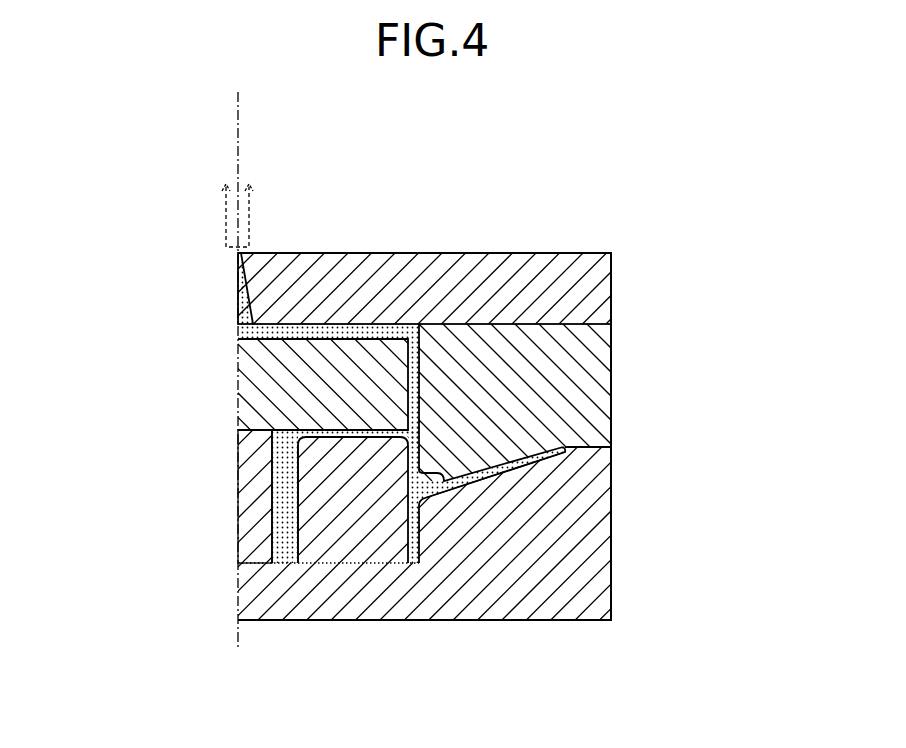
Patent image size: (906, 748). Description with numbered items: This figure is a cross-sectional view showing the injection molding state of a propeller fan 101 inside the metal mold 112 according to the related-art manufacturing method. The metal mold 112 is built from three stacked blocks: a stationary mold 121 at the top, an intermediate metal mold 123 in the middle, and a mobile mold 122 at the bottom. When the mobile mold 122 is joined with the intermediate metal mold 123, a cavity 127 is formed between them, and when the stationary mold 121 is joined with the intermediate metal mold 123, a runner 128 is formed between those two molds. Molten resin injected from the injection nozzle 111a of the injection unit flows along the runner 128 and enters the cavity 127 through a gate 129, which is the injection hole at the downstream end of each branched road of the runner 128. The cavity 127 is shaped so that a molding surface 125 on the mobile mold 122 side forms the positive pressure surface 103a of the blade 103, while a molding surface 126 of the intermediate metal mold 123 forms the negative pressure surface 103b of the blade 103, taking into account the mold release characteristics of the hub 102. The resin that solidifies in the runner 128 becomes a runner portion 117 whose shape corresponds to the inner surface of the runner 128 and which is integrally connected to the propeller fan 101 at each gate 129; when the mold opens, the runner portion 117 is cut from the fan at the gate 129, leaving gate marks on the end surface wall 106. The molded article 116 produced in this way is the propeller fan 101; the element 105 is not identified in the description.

The propeller fan 101 is at (168, 521).
The molded article 116 is at (290, 526).
The hub 102 is at (290, 437).
The blade 103 is at (415, 465).
The positive pressure surface 103a is at (483, 490).
The negative pressure surface 103b is at (298, 528).
The resin strip 105 is at (417, 546).
The end surface wall 106 is at (318, 432).
The injection nozzle 111a is at (252, 218).
The metal mold 112 is at (640, 243).
The runner portion 117 is at (383, 330).
The stationary mold 121 is at (588, 300).
The mobile mold 122 is at (590, 573).
The intermediate metal mold 123 is at (590, 418).
The molding surface 125 is at (503, 480).
The molding surface 126 is at (504, 480).
The cavity 127 is at (273, 498).
The runner 128 is at (298, 325).
The gate 129 is at (418, 442).